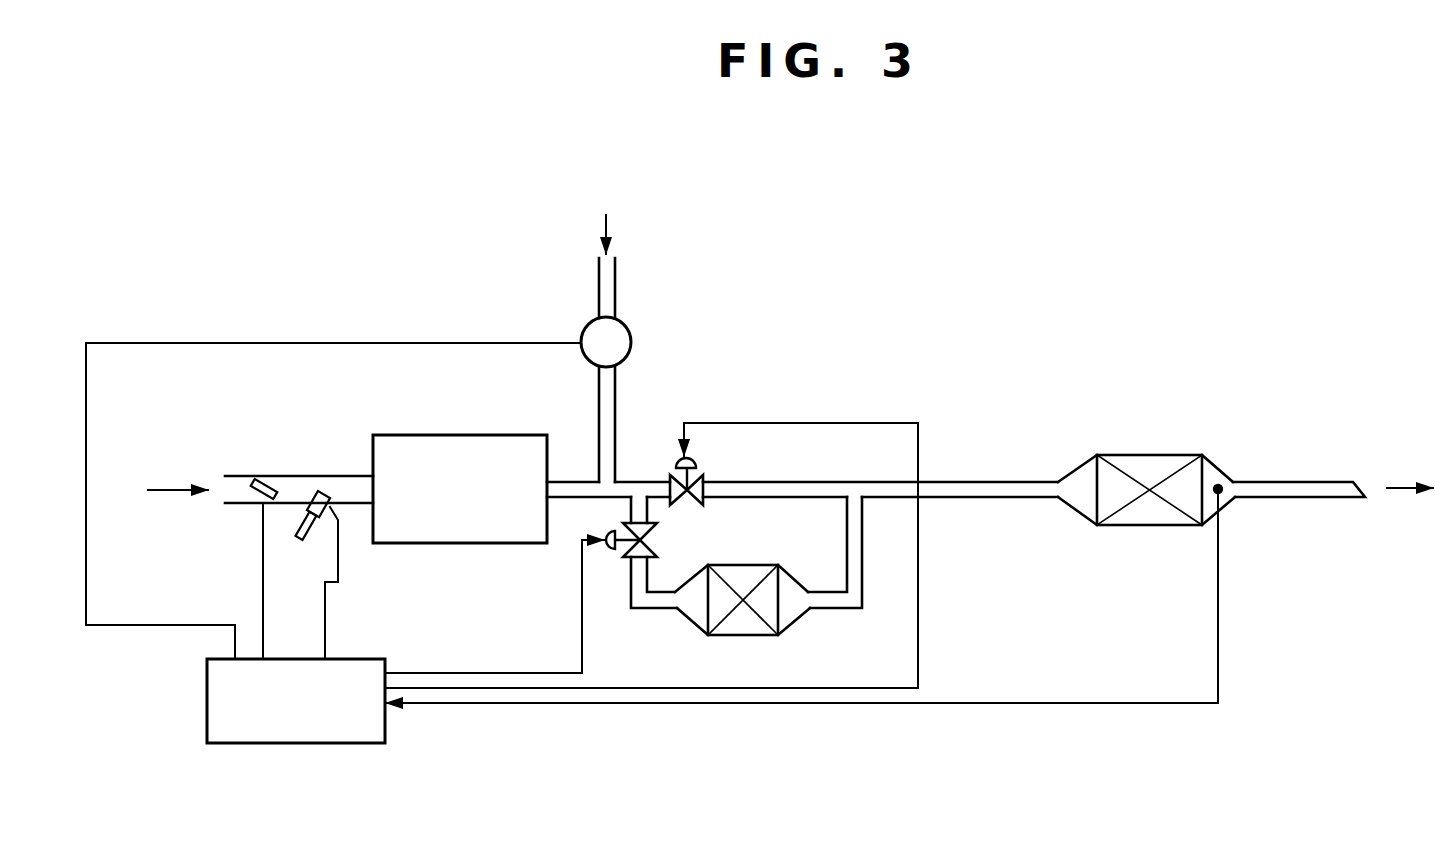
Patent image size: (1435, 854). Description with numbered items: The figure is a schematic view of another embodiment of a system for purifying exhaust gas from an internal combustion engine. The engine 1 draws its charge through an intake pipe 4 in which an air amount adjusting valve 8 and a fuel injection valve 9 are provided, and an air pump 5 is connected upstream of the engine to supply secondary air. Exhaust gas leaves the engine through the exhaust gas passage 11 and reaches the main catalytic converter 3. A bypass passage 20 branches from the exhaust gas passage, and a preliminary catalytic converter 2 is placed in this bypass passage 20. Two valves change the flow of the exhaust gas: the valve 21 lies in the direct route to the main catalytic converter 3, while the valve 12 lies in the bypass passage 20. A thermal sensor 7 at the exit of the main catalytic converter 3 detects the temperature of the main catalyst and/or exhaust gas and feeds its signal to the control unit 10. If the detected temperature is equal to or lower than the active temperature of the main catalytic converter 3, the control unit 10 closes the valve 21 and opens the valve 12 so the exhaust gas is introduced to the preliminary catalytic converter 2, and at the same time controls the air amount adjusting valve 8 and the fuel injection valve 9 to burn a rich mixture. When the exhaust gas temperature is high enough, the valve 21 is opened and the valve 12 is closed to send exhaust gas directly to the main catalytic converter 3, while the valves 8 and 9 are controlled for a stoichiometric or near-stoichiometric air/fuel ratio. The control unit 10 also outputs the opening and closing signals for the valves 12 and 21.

The engine 1 is at (497, 435).
The preliminary catalytic converter 2 is at (752, 567).
The main catalytic converter 3 is at (1155, 455).
The intake pipe 4 is at (300, 476).
The air pump 5 is at (631, 326).
The thermal sensor 7 is at (1223, 478).
The air amount adjusting valve 8 is at (263, 478).
The fuel injection valve 9 is at (327, 478).
The control unit 10 is at (343, 745).
The exhaust gas passage 11 is at (1000, 482).
The valve 12 is at (657, 547).
The bypass passage 20 is at (650, 610).
The valve 21 is at (676, 462).